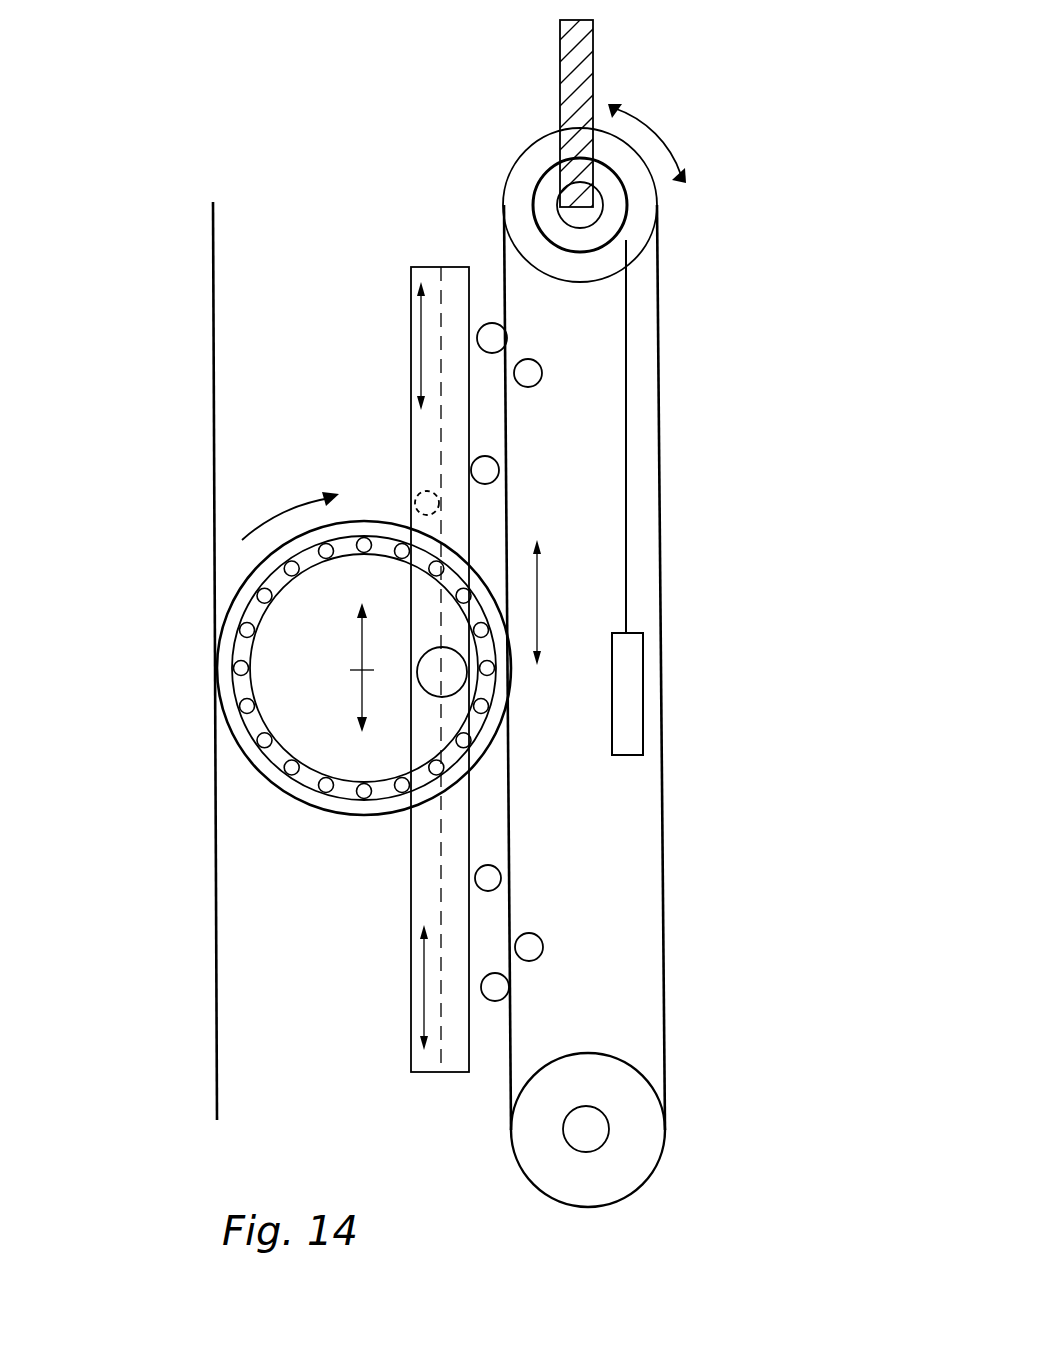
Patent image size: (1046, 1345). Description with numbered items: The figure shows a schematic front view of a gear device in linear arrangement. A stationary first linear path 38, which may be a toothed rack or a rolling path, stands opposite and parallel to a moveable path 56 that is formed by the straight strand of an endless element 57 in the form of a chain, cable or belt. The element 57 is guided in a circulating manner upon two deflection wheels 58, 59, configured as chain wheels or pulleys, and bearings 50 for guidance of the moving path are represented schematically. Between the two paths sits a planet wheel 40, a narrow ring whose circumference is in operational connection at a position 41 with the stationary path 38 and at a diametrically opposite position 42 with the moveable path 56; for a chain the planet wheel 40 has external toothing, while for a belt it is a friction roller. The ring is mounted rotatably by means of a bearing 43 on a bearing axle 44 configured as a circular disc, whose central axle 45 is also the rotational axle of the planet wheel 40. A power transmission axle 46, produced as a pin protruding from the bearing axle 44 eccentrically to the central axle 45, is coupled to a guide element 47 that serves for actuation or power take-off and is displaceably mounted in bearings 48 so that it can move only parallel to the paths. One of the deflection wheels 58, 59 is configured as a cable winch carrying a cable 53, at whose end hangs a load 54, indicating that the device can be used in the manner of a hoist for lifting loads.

The first linear path 38 is at (213, 345).
The planet wheel 40 is at (231, 738).
The position 41 is at (214, 672).
The position 42 is at (505, 690).
The bearing 43 is at (304, 783).
The bearing axle 44 is at (311, 681).
The central axle 45 is at (373, 670).
The power transmission axle 46 is at (452, 672).
The guide element 47 is at (430, 278).
The bearings 48 is at (427, 503).
The bearings 50 is at (528, 373).
The cable 53 is at (626, 590).
The load 54 is at (627, 733).
The moveable path 56 is at (510, 537).
The endless element 57 is at (675, 304).
The deflection wheel 58 is at (643, 227).
The deflection wheel 59 is at (598, 1173).